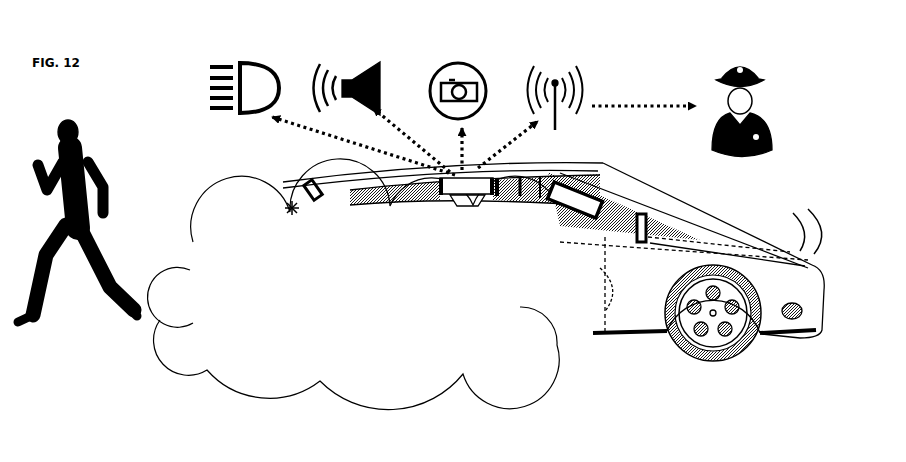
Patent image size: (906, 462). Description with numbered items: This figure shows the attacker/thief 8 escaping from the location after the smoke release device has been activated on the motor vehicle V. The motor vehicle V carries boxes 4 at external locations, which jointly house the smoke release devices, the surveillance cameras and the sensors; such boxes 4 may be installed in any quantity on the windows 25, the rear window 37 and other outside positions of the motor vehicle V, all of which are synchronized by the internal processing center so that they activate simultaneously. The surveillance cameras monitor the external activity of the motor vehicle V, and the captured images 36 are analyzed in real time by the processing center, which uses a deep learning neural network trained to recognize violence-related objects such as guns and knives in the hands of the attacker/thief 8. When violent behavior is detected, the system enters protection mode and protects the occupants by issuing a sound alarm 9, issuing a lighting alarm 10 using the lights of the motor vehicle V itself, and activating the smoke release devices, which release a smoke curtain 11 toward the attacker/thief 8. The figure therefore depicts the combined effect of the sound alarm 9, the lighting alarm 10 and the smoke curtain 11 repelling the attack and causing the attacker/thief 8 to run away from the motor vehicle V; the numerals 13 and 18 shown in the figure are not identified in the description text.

The box 4 is at (300, 186).
The attacker/thief 8 is at (66, 288).
The sound alarm 9 is at (322, 56).
The lighting alarm 10 is at (198, 89).
The smoke curtain 11 is at (222, 344).
The wireless transmitter 13 is at (594, 91).
The law enforcement / authority 18 is at (765, 98).
The window 25 is at (601, 237).
The images 36 is at (457, 54).
The rear window 37 is at (288, 207).
The motor vehicle V is at (790, 350).